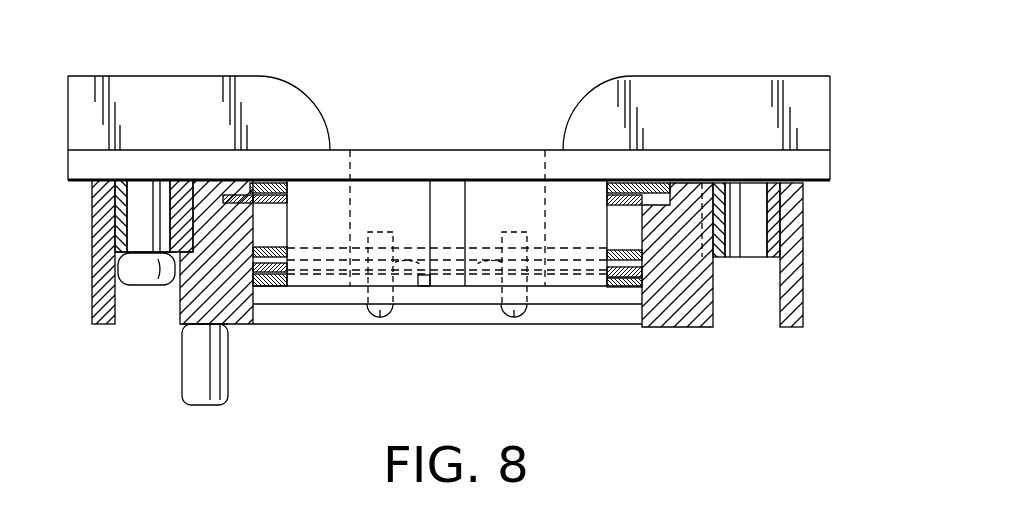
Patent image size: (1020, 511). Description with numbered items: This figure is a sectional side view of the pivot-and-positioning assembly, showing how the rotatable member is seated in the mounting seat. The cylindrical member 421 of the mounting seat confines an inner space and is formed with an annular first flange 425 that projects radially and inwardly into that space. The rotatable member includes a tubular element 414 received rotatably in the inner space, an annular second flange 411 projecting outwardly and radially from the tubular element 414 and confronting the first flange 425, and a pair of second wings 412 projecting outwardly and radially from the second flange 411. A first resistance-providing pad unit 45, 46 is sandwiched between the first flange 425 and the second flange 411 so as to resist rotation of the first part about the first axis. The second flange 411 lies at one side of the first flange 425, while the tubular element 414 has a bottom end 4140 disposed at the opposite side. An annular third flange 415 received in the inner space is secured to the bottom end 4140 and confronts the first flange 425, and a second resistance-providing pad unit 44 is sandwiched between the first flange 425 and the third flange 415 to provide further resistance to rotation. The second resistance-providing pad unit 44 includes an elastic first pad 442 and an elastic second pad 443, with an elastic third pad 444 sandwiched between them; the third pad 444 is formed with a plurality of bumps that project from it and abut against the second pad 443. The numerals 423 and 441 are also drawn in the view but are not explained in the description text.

The second flange 411 is at (449, 128).
The second wings 412 is at (763, 78).
The tubular element 414 is at (613, 233).
The third flange 415 is at (330, 307).
The cylindrical member 421 is at (667, 327).
The lower support plate 423 is at (470, 322).
The first flange 425 is at (293, 213).
The bottom end 4140 is at (573, 287).
The second resistance-providing pad unit 44 is at (238, 272).
The bolt shaft 441 is at (247, 270).
The first pad 442 is at (260, 250).
The second pad 443 is at (268, 287).
The third pad 444 is at (421, 287).
The first resistance-providing pad unit 45 is at (650, 180).
The first resistance-providing pad unit 46 is at (698, 180).